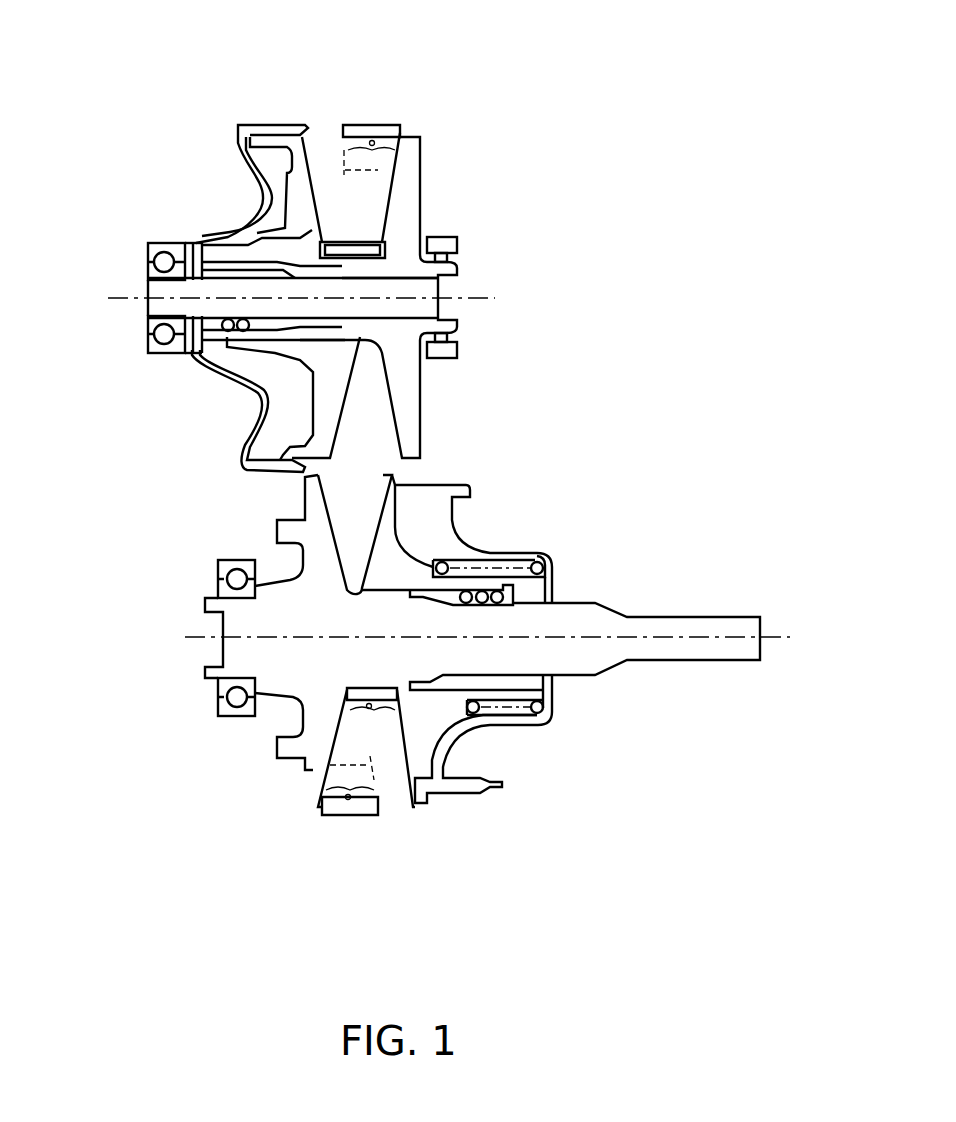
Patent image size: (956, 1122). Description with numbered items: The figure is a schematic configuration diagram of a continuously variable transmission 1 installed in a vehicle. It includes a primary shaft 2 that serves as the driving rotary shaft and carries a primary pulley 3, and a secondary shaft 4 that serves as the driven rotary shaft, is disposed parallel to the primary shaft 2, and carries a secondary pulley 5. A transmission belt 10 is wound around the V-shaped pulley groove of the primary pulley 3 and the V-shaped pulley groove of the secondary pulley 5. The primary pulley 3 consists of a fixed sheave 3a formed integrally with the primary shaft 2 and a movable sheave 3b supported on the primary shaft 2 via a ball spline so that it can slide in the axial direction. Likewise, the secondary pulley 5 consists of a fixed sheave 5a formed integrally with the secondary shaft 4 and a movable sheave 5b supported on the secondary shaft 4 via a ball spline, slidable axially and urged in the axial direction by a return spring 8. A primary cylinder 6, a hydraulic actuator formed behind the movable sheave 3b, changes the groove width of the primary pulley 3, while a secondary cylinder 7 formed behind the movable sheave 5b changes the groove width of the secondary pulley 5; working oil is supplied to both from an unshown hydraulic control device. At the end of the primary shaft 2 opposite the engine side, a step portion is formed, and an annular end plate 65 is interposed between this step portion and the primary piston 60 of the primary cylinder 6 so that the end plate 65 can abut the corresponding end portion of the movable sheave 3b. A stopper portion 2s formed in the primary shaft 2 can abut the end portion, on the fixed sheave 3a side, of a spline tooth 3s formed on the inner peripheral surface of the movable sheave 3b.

The continuously variable transmission 1 is at (542, 390).
The primary shaft 2 is at (150, 290).
The stopper portion 2s is at (273, 243).
The primary pulley 3 is at (436, 48).
The fixed sheave 3a is at (410, 163).
The movable sheave 3b is at (305, 165).
The spline tooth 3s is at (280, 248).
The secondary shaft 4 is at (597, 623).
The secondary pulley 5 is at (411, 888).
The fixed sheave 5a is at (312, 775).
The movable sheave 5b is at (422, 770).
The primary cylinder 6 is at (247, 204).
The primary piston 60 is at (253, 400).
The end plate 65 is at (190, 245).
The secondary cylinder 7 is at (475, 742).
The return spring 8 is at (540, 566).
The transmission belt 10 is at (383, 258).